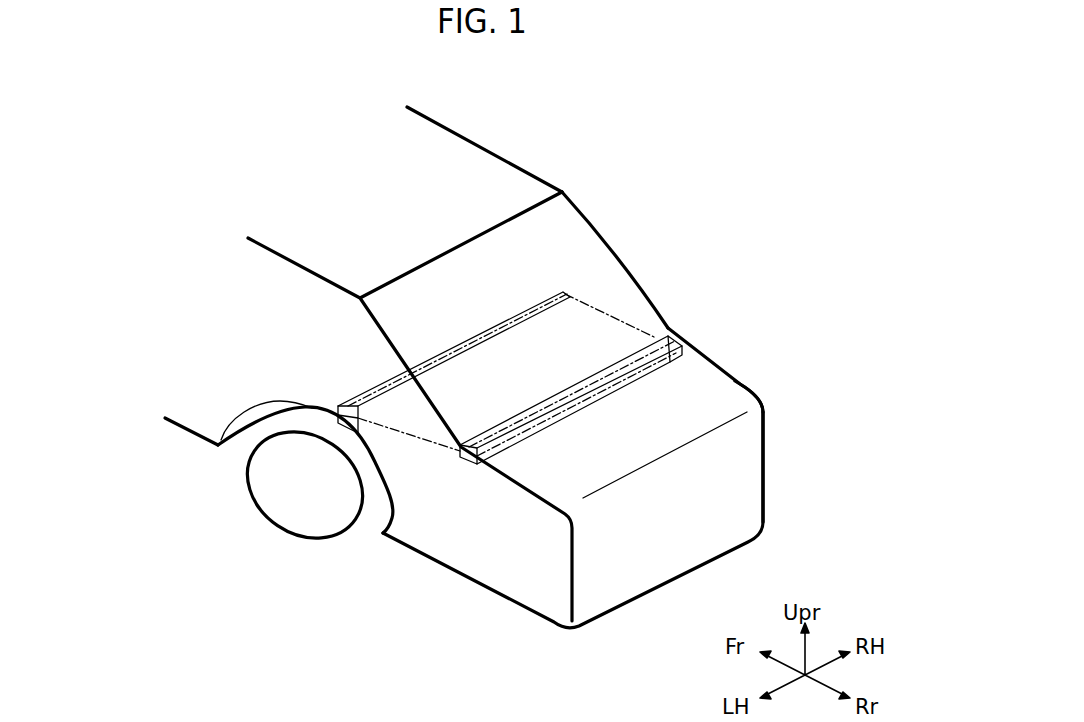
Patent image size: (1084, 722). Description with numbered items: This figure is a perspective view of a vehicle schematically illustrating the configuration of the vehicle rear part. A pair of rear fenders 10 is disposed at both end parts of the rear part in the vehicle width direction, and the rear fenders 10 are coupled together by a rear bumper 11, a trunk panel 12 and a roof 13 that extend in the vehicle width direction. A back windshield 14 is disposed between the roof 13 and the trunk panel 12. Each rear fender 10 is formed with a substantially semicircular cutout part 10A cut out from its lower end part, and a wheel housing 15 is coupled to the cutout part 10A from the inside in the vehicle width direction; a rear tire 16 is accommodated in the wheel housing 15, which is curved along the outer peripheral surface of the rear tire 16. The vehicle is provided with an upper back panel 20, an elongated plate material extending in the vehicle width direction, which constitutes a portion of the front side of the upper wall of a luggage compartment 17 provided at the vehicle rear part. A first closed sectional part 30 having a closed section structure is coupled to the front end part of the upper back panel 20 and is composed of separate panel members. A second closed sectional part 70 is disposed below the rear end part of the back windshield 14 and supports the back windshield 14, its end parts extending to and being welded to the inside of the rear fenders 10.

The rear fender 10 is at (707, 353).
The cutout part 10A is at (232, 441).
The rear bumper 11 is at (748, 477).
The trunk panel 12 is at (740, 383).
The roof 13 is at (467, 160).
The back windshield 14 is at (612, 258).
The wheel housing 15 is at (253, 420).
The rear tire 16 is at (293, 512).
The luggage compartment 17 is at (488, 533).
The upper back panel 20 is at (577, 328).
The first closed sectional part 30 is at (483, 318).
The second closed sectional part 70 is at (587, 415).